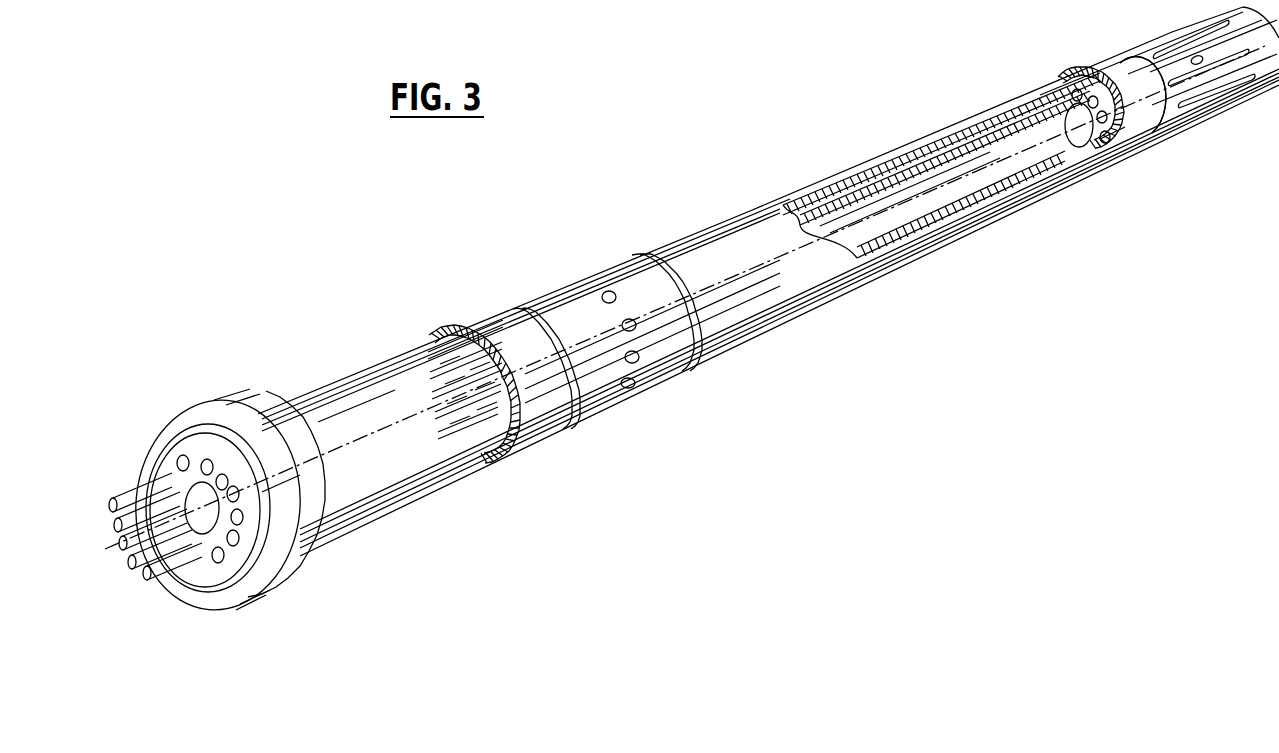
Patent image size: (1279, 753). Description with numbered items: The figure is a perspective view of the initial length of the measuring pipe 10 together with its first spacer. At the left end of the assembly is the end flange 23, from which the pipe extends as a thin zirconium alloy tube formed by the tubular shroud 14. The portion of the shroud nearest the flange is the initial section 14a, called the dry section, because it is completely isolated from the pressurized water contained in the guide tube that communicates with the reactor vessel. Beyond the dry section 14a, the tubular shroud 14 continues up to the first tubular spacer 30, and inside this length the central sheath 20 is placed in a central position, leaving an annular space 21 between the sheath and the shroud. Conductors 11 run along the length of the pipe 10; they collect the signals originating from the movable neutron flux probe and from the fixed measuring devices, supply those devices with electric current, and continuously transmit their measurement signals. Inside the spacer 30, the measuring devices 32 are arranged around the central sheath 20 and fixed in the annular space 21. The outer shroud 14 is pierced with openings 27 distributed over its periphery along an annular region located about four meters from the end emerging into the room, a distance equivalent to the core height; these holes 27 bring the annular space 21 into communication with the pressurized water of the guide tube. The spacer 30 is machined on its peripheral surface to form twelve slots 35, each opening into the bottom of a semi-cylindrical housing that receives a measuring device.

The measuring pipe 10 is at (748, 348).
The conductors 11 is at (162, 580).
The tubular shroud 14 is at (728, 218).
The initial section 14a is at (335, 405).
The central sheath 20 is at (986, 188).
The annular space 21 is at (938, 154).
The end flange 23 is at (215, 400).
The openings 27 is at (607, 292).
The first tubular spacer 30 is at (1169, 108).
The measuring devices 32 is at (1082, 152).
The slots 35 is at (1223, 106).